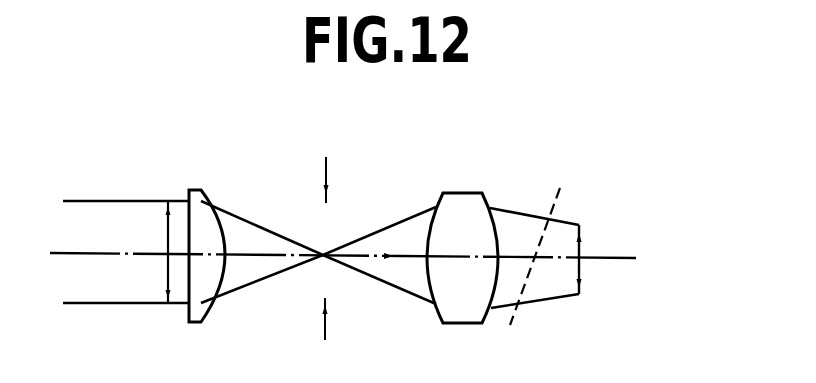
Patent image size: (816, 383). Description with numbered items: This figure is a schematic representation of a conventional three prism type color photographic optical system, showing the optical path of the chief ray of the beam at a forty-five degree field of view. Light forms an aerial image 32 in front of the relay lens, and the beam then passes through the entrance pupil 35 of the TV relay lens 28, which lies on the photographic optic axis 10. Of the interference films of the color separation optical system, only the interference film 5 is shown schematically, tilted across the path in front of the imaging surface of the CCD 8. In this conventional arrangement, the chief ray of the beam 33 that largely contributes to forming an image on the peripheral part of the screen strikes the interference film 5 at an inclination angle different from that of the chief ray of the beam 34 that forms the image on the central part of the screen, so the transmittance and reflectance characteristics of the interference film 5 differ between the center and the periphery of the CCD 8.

The aerial image 32 is at (166, 228).
The entrance pupil 35 is at (327, 178).
The chief ray of the beam 34 is at (372, 258).
The TV relay lens 28 is at (460, 204).
The chief ray of the beam 33 is at (527, 213).
The CCD 8 is at (582, 243).
The interference film 5 is at (530, 288).
The photographic optic axis 10 is at (613, 263).